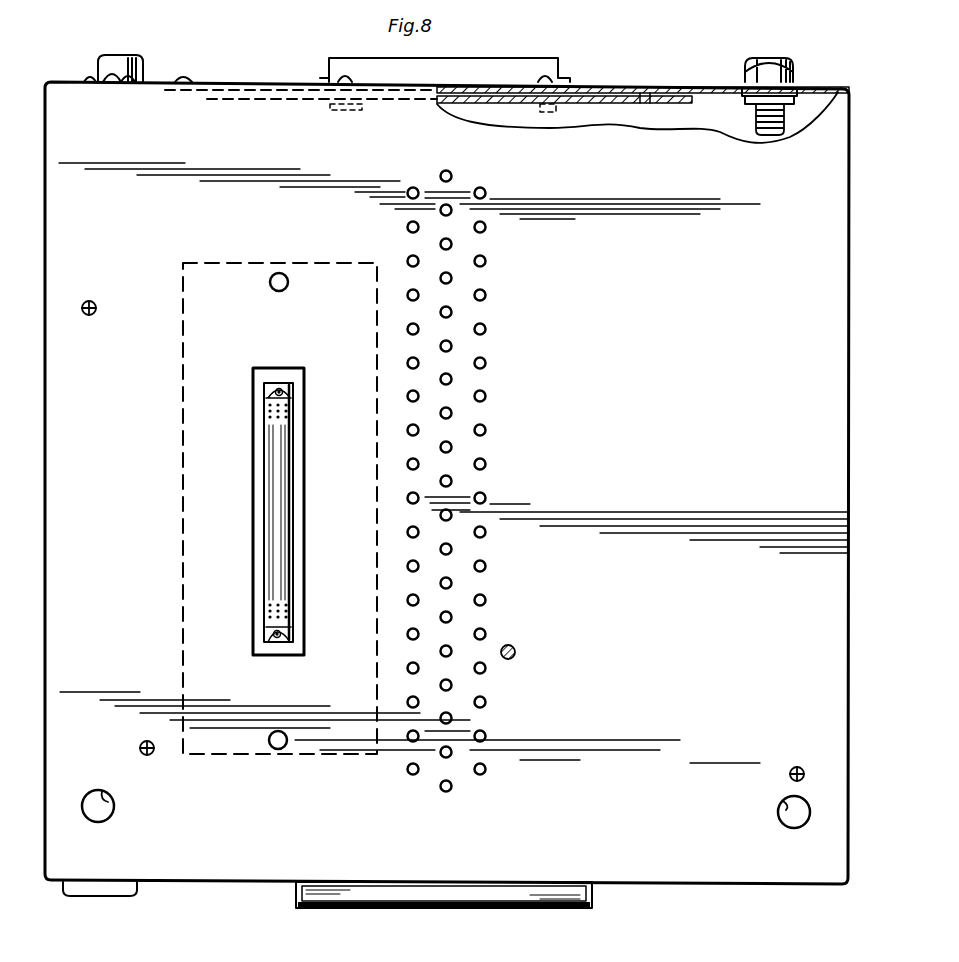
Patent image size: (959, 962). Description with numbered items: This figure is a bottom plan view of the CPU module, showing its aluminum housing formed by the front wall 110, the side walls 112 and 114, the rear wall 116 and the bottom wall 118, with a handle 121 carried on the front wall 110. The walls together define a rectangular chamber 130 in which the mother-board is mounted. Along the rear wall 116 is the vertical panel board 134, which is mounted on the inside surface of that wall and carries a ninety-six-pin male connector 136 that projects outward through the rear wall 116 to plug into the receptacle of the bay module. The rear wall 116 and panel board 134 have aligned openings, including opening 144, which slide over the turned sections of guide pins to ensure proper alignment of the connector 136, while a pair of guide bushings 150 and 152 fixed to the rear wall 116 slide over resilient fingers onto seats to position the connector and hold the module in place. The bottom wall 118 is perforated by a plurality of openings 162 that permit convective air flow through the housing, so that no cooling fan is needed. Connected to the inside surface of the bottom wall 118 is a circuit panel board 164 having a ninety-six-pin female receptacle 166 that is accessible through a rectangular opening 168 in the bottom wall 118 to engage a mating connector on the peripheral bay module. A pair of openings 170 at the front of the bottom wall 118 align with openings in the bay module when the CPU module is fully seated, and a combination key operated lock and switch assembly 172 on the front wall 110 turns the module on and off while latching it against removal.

The front wall 110 is at (240, 886).
The side wall 112 is at (42, 258).
The side wall 114 is at (852, 236).
The rear wall 116 is at (605, 86).
The bottom wall 118 is at (662, 255).
The handle 121 is at (345, 903).
The rectangular chamber 130 is at (736, 138).
The vertical panel board 134 is at (647, 105).
The 96-pin male connector 136 is at (360, 58).
The opening 144 is at (692, 66).
The guide bushing 150 is at (128, 70).
The guide bushing 152 is at (762, 58).
The openings 162 is at (484, 366).
The circuit panel board 164 is at (280, 508).
The 96-pin female receptacle 166 is at (306, 511).
The rectangular opening 168 is at (298, 448).
The openings 170 is at (114, 806).
The key operated lock and switch assembly 172 is at (128, 896).